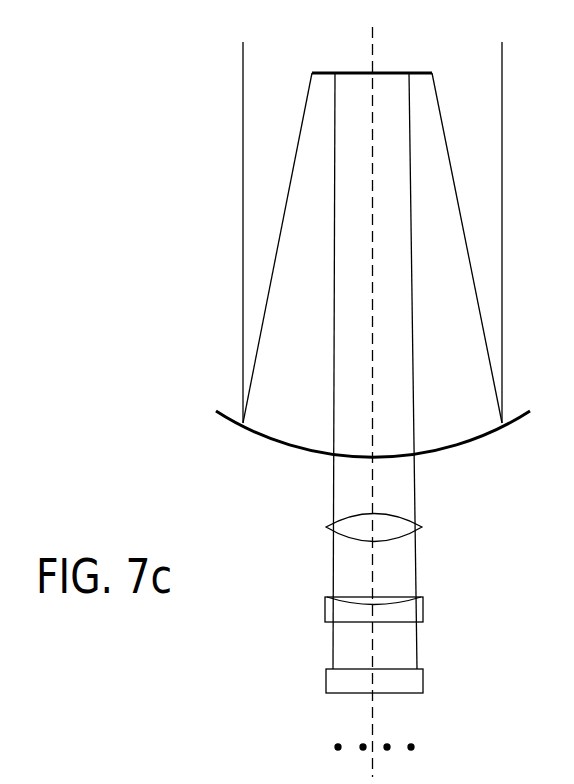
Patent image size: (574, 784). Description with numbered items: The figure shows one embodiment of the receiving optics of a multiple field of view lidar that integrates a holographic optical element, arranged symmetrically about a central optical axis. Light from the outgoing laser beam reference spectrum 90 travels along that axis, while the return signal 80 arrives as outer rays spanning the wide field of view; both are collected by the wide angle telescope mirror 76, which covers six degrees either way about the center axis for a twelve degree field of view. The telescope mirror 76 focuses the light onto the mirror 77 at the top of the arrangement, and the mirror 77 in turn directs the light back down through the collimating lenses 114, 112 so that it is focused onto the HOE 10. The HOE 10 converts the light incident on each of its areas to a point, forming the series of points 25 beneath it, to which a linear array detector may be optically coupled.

The outgoing laser beam reference spectrum 90 is at (372, 43).
The mirror 77 is at (416, 73).
The return signal 80 is at (243, 133).
The wide angle telescope mirror 76 is at (468, 443).
The lens 114 is at (422, 527).
The lens 112 is at (423, 608).
The HOE 10 is at (423, 681).
The series of points 25 is at (413, 745).